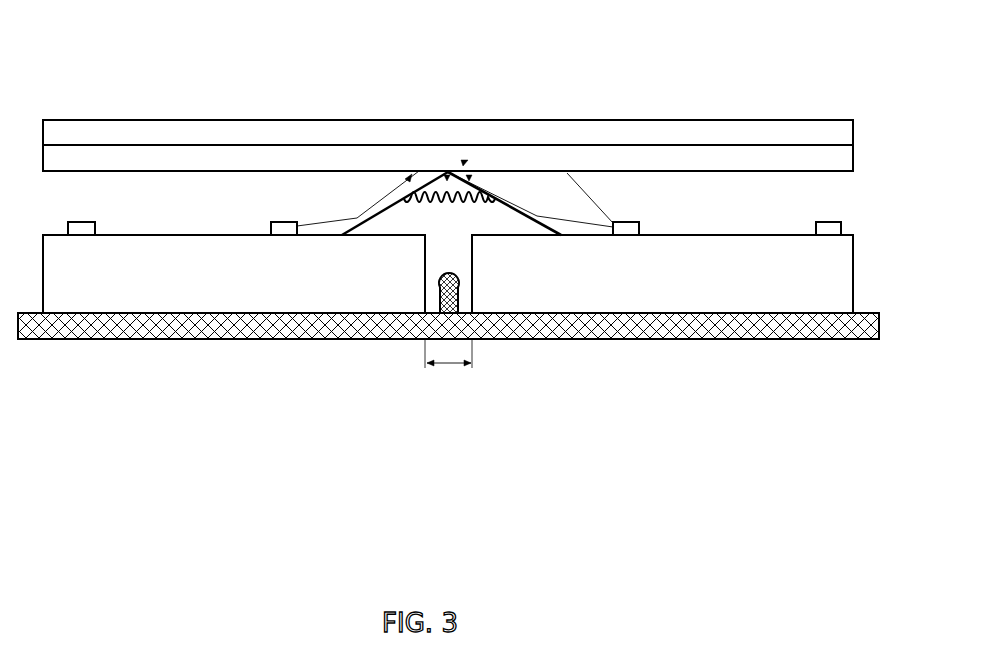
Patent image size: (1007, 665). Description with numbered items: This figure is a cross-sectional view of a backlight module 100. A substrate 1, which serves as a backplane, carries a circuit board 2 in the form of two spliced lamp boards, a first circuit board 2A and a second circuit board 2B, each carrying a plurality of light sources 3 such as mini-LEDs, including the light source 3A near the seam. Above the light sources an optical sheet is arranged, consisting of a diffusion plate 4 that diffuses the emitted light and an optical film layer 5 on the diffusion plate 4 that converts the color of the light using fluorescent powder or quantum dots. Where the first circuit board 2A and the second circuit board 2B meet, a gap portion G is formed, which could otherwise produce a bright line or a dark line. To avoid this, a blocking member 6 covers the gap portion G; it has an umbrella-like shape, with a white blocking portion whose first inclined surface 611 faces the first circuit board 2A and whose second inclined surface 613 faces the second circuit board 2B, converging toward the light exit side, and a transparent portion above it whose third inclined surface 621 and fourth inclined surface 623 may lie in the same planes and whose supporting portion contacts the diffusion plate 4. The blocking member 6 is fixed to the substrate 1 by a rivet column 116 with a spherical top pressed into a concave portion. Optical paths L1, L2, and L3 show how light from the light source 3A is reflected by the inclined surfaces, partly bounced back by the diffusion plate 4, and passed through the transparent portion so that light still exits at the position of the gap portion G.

The backlight module 100 is at (476, 256).
The substrate 1 is at (876, 333).
The circuit board 2 is at (448, 354).
The first circuit board 2A is at (386, 303).
The second circuit board 2B is at (625, 298).
The light source 3 is at (501, 212).
The light source 3A is at (271, 224).
The diffusion plate 4 is at (845, 160).
The optical film layer 5 is at (845, 128).
The blocking member 6 is at (455, 152).
The first inclined surface 611 is at (345, 230).
The second inclined surface 613 is at (537, 217).
The third inclined surface 621 is at (432, 170).
The fourth inclined surface 623 is at (497, 172).
The rivet column 116 is at (471, 337).
The gap portion G is at (448, 354).
The light L1 is at (358, 198).
The light L2 is at (598, 198).
The light L3 is at (530, 199).